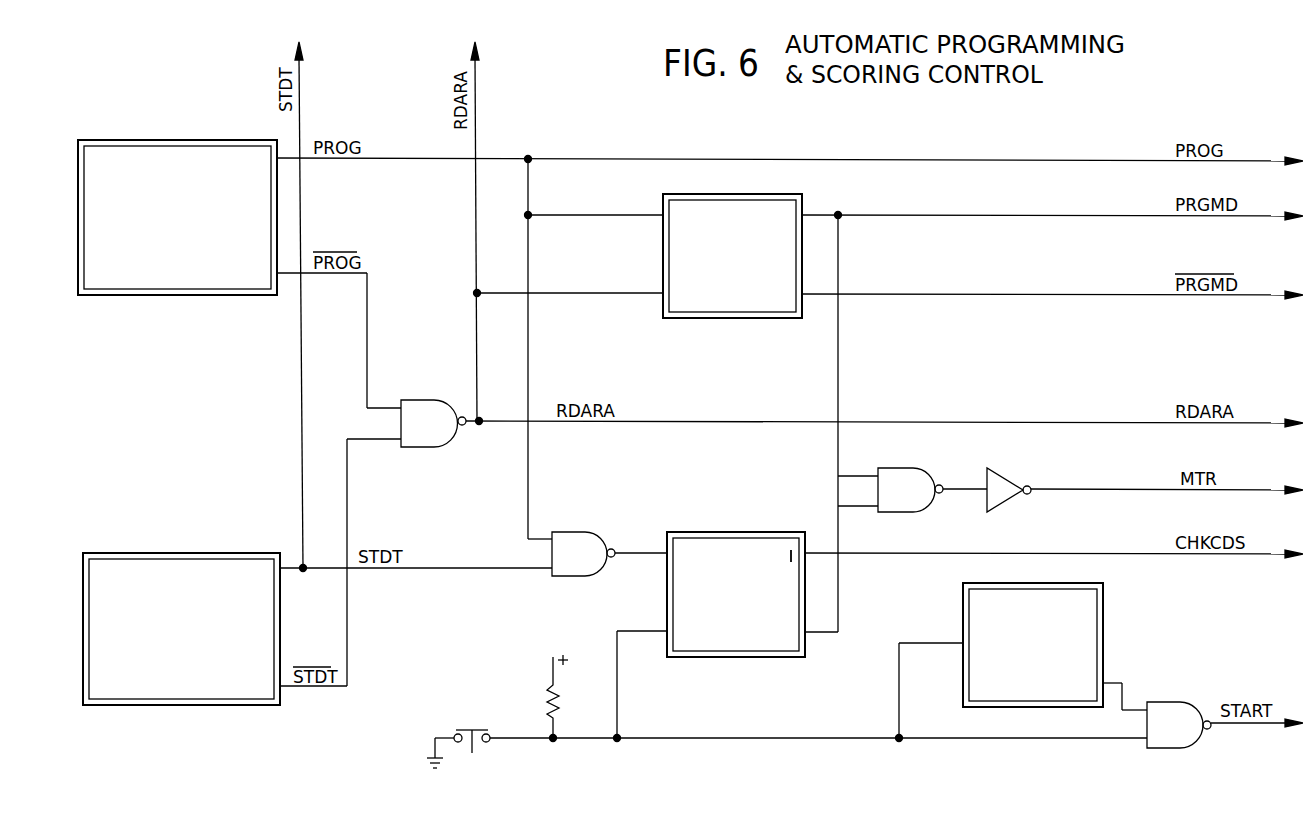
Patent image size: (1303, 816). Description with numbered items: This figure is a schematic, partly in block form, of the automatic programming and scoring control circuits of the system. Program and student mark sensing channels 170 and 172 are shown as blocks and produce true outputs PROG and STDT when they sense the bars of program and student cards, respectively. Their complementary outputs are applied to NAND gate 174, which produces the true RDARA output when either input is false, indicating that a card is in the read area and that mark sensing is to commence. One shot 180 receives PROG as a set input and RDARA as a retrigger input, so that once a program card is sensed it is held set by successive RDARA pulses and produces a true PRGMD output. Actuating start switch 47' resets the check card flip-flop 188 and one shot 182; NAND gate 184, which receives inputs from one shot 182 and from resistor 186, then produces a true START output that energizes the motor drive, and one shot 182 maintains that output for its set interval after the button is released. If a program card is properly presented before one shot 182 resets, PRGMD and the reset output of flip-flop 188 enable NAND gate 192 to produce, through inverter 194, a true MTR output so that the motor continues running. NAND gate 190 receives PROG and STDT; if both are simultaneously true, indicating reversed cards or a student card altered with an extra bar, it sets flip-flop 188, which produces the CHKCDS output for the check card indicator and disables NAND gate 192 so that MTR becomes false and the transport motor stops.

The program mark sensing channel 170 is at (221, 140).
The student mark sensing channel 172 is at (228, 553).
The NAND gate 174 is at (425, 388).
The one shot 180 is at (708, 318).
The one shot 182 is at (963, 603).
The NAND gate 184 is at (1168, 695).
The resistor 186 is at (548, 688).
The check card flip-flop 188 is at (758, 522).
The NAND gate 190 is at (591, 524).
The NAND gate 192 is at (897, 468).
The inverter 194 is at (1002, 470).
The start switch 47' is at (476, 743).